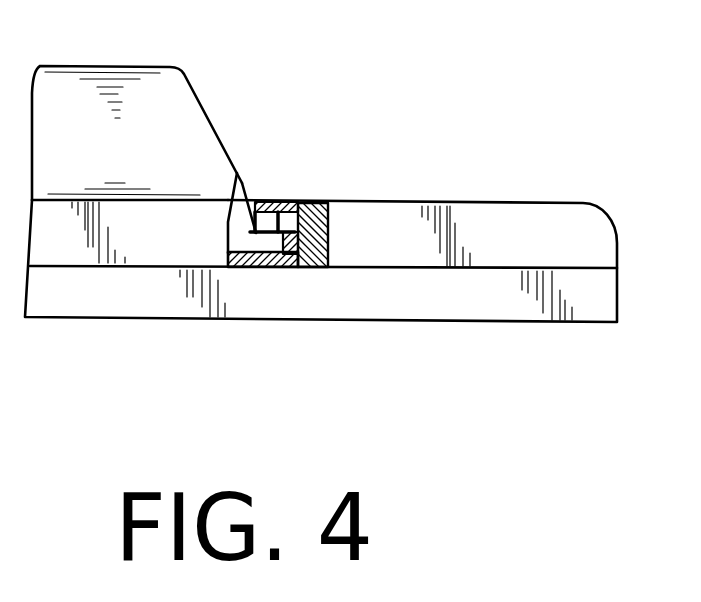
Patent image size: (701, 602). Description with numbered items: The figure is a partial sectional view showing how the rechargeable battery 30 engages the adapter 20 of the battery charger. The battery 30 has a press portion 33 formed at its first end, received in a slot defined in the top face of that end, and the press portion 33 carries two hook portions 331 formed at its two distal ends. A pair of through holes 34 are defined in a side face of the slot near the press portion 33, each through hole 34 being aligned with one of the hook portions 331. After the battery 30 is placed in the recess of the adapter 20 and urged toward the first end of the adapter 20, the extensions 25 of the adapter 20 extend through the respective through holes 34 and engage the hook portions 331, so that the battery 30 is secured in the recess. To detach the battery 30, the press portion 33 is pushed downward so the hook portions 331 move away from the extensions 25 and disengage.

The adapter 20 is at (523, 308).
The extension 25 is at (270, 207).
The rechargeable battery 30 is at (77, 103).
The press portion 33 is at (243, 187).
The hook portion 331 is at (233, 310).
The through hole 34 is at (325, 206).